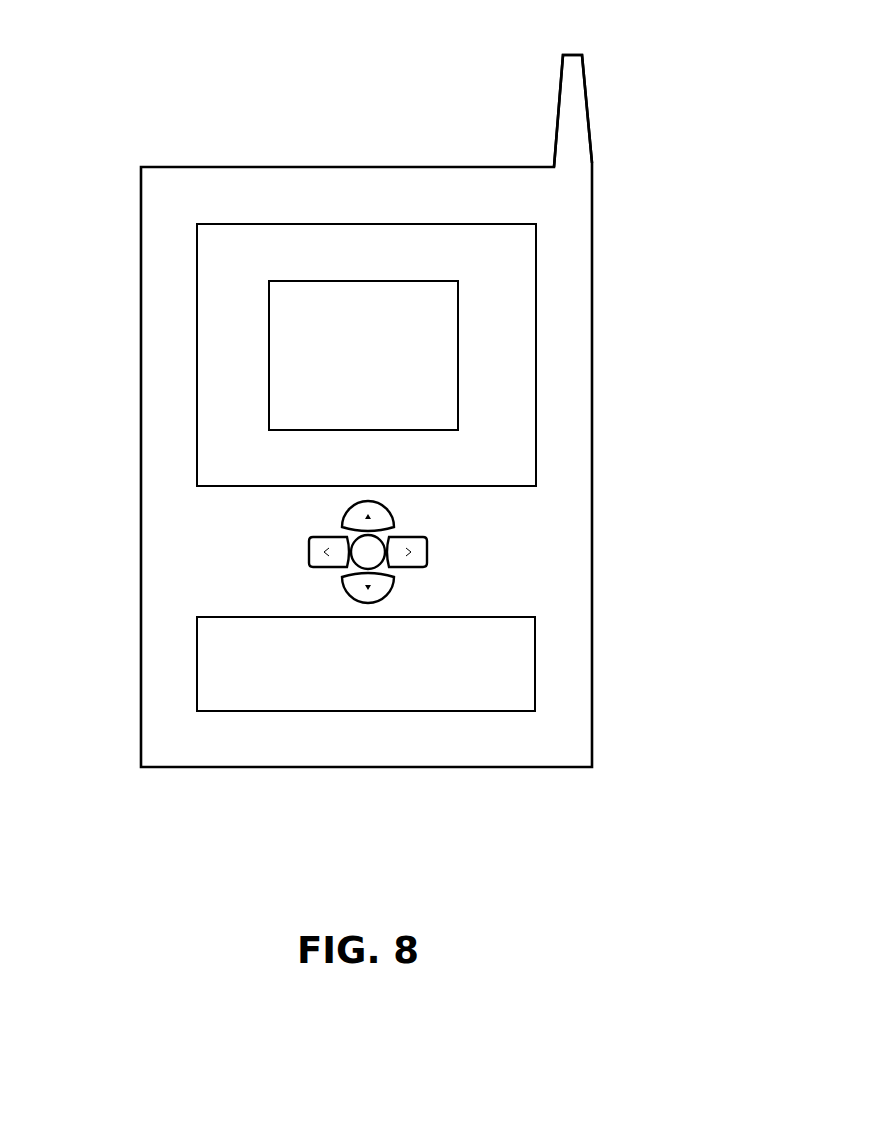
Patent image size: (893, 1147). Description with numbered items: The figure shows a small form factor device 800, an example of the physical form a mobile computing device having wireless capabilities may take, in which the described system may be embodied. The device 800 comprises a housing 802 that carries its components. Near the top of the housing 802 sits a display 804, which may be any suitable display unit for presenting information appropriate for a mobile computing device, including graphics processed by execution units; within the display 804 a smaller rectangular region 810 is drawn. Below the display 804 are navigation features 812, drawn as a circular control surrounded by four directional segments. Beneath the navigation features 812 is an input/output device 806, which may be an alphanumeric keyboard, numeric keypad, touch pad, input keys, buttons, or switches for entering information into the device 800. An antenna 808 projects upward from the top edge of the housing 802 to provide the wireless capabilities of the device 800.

The small form factor device 800 is at (150, 62).
The housing 802 is at (593, 467).
The display 804 is at (537, 242).
The input/output (I/O) device 806 is at (536, 655).
The antenna 808 is at (556, 103).
The display window 810 is at (459, 373).
The navigation features 812 is at (455, 543).